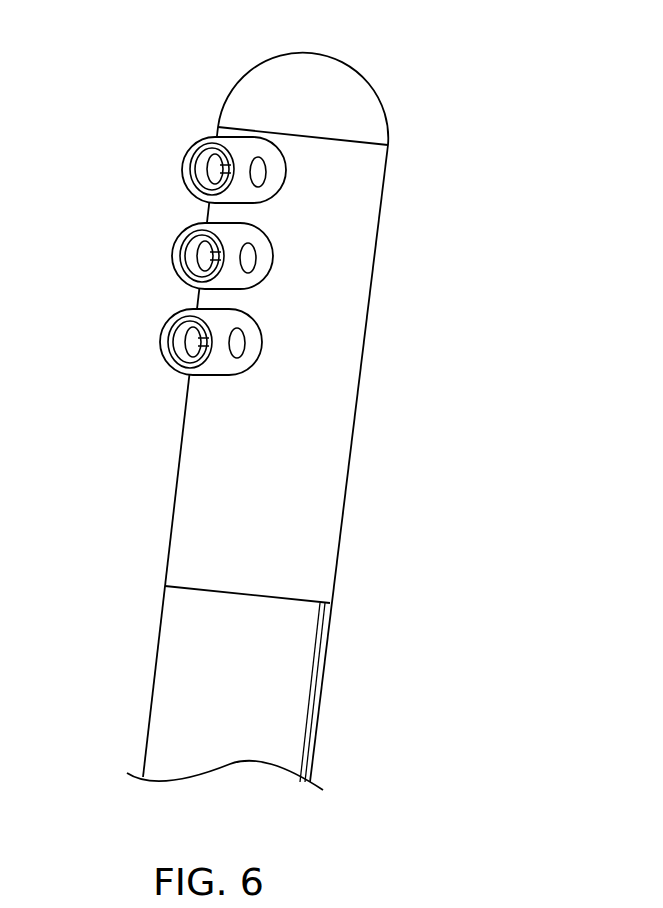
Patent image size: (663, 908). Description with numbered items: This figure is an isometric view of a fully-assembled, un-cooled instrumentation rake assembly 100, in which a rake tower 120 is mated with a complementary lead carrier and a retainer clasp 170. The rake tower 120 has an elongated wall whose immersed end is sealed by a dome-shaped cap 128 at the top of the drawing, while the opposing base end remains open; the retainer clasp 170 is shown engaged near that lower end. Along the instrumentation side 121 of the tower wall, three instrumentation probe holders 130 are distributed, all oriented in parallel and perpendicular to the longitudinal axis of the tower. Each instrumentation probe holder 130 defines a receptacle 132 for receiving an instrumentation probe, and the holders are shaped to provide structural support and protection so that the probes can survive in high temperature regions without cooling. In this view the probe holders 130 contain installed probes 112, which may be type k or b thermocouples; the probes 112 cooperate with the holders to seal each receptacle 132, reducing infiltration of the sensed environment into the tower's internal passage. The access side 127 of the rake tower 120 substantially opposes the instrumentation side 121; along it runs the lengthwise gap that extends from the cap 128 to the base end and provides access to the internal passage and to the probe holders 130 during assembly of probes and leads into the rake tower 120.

The instrumentation rake assembly 100 is at (480, 432).
The installed probes 112 is at (194, 185).
The rake tower 120 is at (380, 303).
The instrumentation side 121 is at (243, 460).
The access side 127 is at (402, 147).
The dome-shaped cap 128 is at (358, 64).
The instrumentation probe holders 130 is at (180, 178).
The receptacle 132 is at (187, 162).
The retainer clasp 170 is at (196, 702).